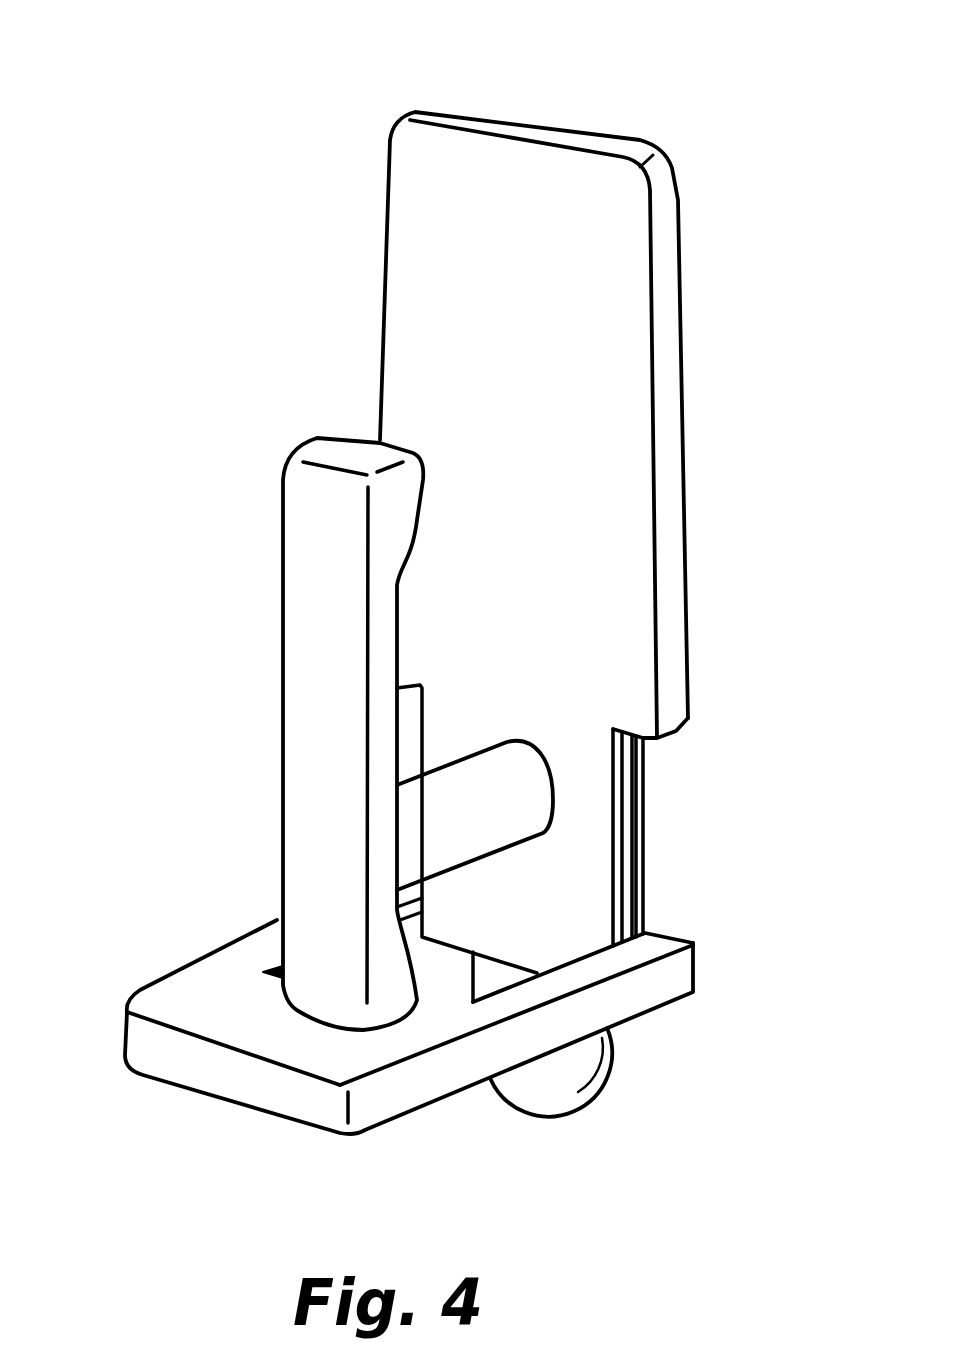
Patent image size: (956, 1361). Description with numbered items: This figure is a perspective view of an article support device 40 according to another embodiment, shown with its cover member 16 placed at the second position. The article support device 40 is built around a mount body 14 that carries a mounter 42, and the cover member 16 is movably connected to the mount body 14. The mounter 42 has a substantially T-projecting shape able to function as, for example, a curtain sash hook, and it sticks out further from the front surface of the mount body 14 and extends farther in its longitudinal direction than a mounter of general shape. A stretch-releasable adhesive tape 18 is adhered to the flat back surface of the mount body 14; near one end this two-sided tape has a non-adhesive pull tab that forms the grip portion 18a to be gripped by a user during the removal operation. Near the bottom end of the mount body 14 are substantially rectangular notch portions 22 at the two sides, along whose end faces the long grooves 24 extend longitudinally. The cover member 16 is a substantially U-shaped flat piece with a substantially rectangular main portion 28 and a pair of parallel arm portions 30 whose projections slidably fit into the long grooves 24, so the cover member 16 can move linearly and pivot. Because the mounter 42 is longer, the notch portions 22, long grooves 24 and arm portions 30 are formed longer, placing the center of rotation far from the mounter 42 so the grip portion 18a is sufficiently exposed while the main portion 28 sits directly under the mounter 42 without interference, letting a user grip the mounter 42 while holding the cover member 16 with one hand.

The article support device 40 is at (272, 122).
The mount body 14 is at (520, 128).
The cover member 16 is at (212, 1080).
The stretch-releasable adhesive tape 18 is at (620, 1078).
The grip portion 18a is at (537, 1082).
The notch portions 22 is at (676, 731).
The long grooves 24 is at (628, 806).
The main portion 28 is at (203, 1000).
The arm portions 30 is at (647, 990).
The mounter 42 is at (297, 495).